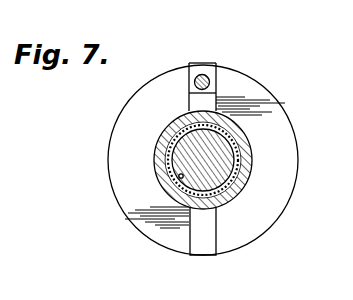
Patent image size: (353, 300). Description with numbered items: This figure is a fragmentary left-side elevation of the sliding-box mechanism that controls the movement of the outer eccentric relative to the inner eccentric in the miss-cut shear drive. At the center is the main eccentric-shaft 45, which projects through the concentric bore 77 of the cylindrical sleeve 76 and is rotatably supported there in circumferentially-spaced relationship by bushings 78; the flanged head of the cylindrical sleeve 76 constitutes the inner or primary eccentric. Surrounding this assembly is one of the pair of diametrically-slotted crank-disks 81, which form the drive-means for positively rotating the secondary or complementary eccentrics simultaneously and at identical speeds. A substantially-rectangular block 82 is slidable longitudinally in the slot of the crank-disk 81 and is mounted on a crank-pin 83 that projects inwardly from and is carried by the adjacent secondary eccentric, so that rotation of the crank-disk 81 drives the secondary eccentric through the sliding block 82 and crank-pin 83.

The crank-disk 81 is at (110, 133).
The block 82 is at (207, 68).
The crank-pin 83 is at (198, 76).
The cylindrical sleeve 76 is at (162, 138).
The concentric bore 77 is at (170, 177).
The main eccentric-shaft 45 is at (186, 162).
The bushing 78 is at (185, 128).